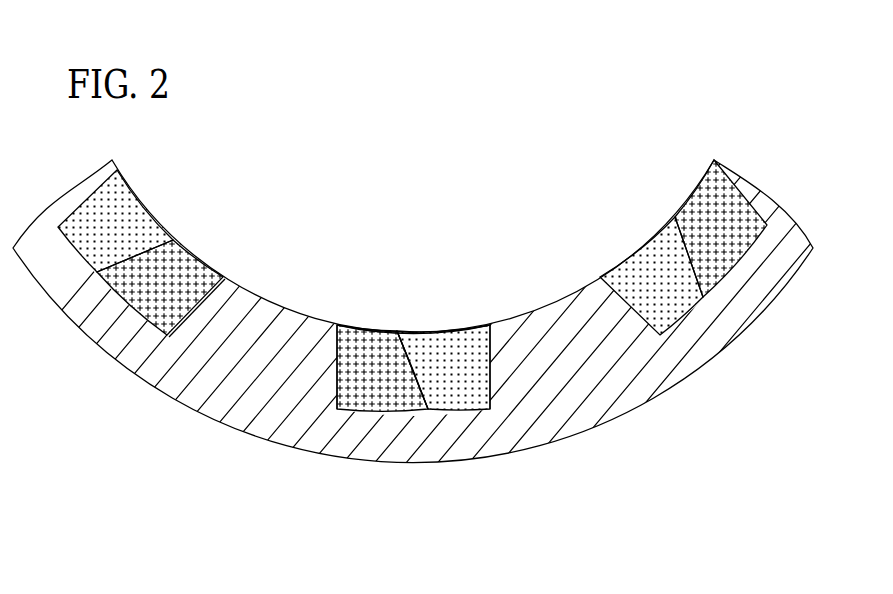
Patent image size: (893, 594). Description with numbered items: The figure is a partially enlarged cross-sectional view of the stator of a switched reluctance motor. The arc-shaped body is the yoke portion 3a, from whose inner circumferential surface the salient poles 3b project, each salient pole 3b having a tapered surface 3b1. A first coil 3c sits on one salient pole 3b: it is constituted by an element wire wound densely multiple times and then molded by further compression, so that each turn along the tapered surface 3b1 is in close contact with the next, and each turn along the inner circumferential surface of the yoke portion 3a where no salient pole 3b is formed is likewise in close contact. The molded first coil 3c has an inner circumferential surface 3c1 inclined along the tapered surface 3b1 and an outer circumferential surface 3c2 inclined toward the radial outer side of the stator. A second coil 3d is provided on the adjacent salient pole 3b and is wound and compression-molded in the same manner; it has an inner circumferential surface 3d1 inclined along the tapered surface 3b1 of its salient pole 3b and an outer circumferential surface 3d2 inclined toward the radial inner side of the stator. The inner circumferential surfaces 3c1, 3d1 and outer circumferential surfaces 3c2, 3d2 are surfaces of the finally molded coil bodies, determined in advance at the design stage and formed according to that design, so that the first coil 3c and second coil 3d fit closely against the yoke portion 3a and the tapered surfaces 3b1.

The yoke portion 3a is at (717, 338).
The salient pole 3b is at (283, 332).
The tapered surface 3b1 is at (348, 348).
The first coil 3c is at (360, 400).
The inner circumferential surface 3c1 is at (335, 392).
The outer circumferential surface 3c2 is at (418, 357).
The second coil 3d is at (455, 397).
The inner circumferential surface 3d1 is at (491, 395).
The outer circumferential surface 3d2 is at (424, 400).